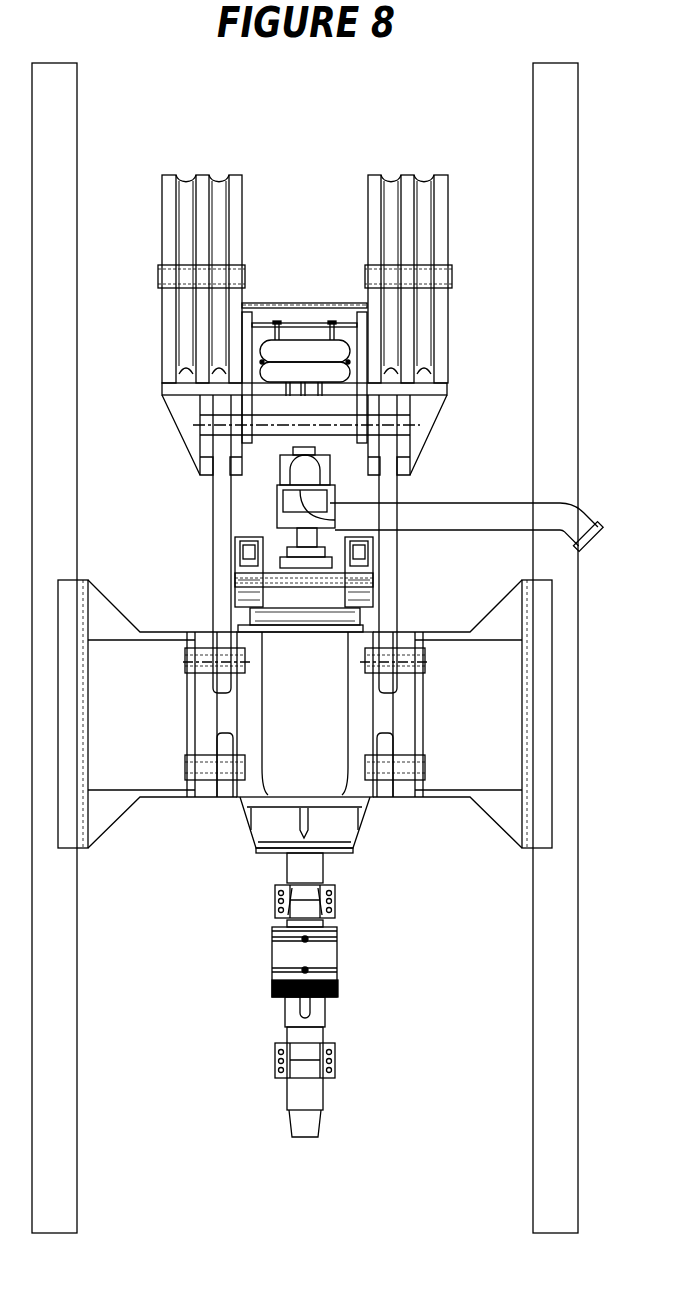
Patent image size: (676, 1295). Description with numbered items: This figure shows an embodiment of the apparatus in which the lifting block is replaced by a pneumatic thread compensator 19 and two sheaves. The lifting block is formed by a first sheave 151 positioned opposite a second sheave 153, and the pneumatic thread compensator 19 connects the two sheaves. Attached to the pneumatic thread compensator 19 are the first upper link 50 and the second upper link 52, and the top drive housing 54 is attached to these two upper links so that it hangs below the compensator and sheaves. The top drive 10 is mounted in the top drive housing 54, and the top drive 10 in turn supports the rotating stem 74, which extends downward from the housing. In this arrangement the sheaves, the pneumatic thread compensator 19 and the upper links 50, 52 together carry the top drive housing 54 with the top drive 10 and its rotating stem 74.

The top drive 10 is at (467, 92).
The pneumatic thread compensator 19 is at (300, 303).
The first upper link 50 is at (212, 565).
The second upper link 52 is at (395, 565).
The top drive housing 54 is at (373, 717).
The rotating stem 74 is at (285, 866).
The first sheave 151 is at (448, 188).
The second sheave 153 is at (162, 188).